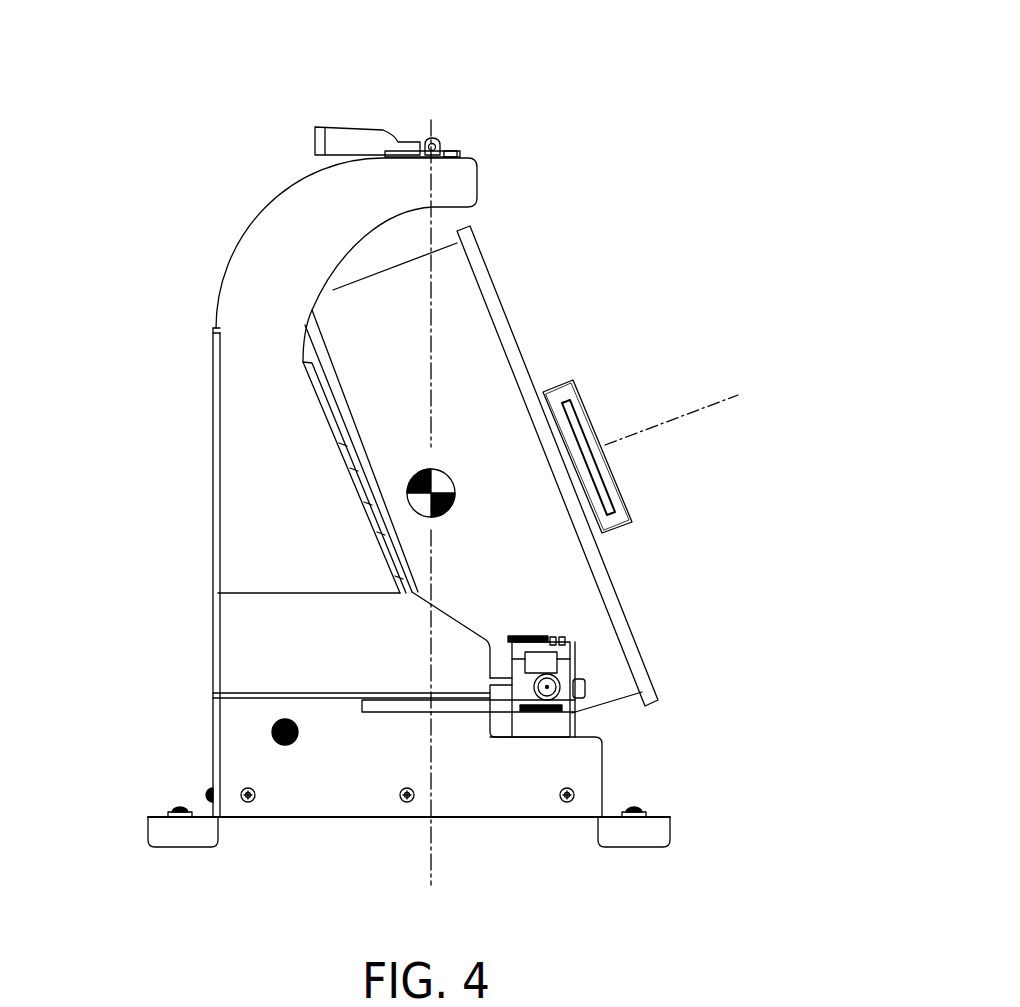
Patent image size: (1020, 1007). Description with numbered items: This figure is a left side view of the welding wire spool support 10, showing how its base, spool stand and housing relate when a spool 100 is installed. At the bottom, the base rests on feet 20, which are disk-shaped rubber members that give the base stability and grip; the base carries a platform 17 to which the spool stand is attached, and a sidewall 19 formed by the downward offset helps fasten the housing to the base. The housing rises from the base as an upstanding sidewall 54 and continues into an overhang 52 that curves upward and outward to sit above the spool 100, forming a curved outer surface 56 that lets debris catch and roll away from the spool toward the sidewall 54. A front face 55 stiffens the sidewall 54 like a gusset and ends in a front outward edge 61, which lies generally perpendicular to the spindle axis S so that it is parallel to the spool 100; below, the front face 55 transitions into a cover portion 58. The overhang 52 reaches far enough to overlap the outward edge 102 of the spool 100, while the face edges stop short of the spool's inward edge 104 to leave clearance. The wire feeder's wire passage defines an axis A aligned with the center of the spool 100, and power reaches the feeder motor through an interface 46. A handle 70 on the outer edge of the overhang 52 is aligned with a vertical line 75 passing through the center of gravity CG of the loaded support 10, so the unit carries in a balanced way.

The welding wire spool support 10 is at (512, 152).
The platform 17 is at (352, 818).
The sidewall 19 is at (283, 818).
The feet 20 is at (690, 830).
The interface 46 is at (287, 747).
The overhang 52 is at (412, 165).
The sidewall 54 is at (213, 378).
The front face 55 is at (242, 333).
The curved outer surface 56 is at (266, 208).
The cover portion 58 is at (232, 727).
The front outward edge 61 is at (358, 483).
The handle 70 is at (352, 138).
The vertical line 75 is at (432, 850).
The spool 100 is at (532, 336).
The outward edge 102 is at (470, 222).
The inward edge 104 is at (400, 545).
The axis A is at (572, 712).
The axis S is at (670, 417).
The center of gravity CG is at (445, 472).